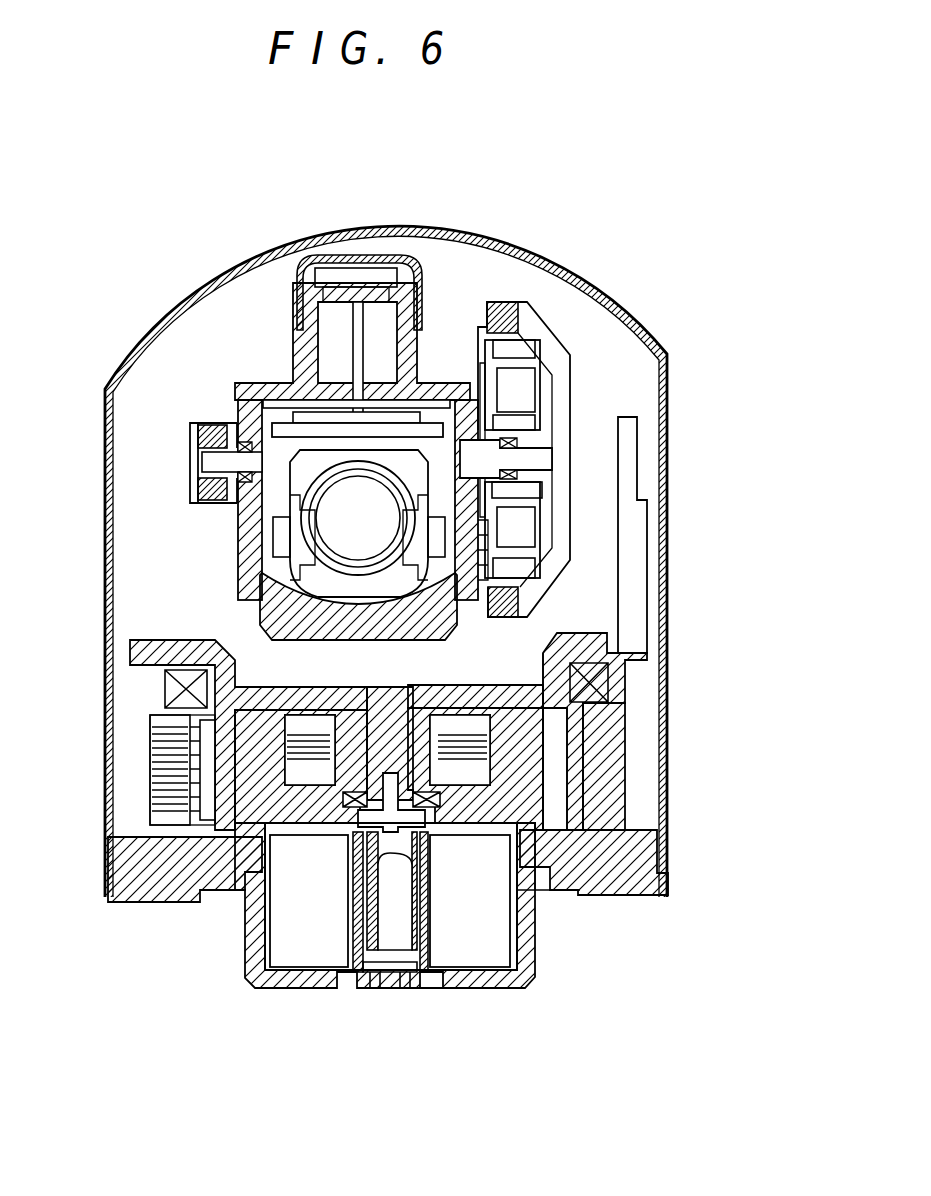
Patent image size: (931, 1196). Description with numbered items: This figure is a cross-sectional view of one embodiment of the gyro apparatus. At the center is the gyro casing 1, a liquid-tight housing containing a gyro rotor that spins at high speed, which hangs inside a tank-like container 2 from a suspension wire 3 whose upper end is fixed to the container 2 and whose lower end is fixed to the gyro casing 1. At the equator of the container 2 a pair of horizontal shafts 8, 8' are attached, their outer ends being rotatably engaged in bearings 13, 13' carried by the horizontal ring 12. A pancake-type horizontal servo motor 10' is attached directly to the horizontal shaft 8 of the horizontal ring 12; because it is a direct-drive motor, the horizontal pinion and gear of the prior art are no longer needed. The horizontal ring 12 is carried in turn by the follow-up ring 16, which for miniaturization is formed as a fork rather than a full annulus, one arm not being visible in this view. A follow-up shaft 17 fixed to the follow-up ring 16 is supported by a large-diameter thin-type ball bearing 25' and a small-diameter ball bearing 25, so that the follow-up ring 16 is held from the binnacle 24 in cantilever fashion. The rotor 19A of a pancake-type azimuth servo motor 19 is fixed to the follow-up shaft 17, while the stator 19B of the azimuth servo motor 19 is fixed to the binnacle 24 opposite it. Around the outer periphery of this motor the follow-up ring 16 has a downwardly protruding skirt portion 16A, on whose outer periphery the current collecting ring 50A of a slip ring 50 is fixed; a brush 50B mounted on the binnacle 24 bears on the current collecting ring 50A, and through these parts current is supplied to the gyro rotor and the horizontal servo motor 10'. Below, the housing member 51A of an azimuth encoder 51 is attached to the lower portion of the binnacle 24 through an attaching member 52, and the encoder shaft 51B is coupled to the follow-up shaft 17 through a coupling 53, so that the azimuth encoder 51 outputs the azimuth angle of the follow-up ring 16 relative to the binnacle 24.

The gyro casing 1 is at (313, 460).
The container 2 is at (243, 400).
The suspension wire 3 is at (360, 332).
The horizontal ring 12 is at (208, 422).
The horizontal axis 8' is at (161, 445).
The bearing 13' is at (149, 490).
The pancake-type horizontal servo motor 10' is at (606, 459).
The horizontal shaft 8 is at (590, 436).
The bearing 13 is at (612, 463).
The follow-up ring 16 is at (638, 540).
The thin-type ball bearing 25' is at (654, 653).
The skirt portion 16A is at (557, 763).
The binnacle 24 is at (660, 888).
The ball bearing 25 is at (392, 831).
The follow-up shaft 17 is at (435, 770).
The coupling 53 is at (528, 925).
The attaching member 52 is at (487, 978).
The azimuth encoder 51 is at (410, 1043).
The housing member 51A is at (320, 952).
The shaft 51B is at (378, 955).
The pancake-type azimuth servo motor 19 is at (228, 1065).
The rotor 19A is at (305, 778).
The stator 19B is at (263, 760).
The slip ring 50 is at (170, 955).
The current collecting ring 50A is at (205, 822).
The brush 50B is at (163, 792).